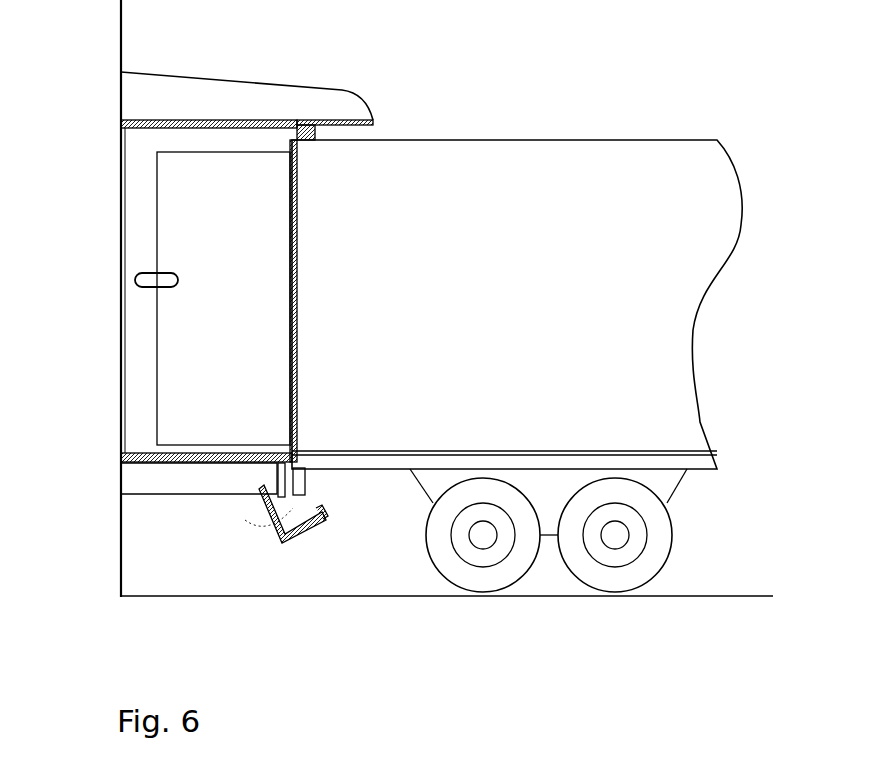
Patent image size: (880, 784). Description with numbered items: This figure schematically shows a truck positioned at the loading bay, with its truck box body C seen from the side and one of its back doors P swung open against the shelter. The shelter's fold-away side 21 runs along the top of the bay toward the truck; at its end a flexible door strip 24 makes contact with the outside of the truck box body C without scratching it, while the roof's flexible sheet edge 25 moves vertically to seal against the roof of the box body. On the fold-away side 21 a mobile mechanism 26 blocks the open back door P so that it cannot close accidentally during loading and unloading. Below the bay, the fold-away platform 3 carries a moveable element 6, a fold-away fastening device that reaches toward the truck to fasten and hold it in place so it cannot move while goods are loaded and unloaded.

The fold-away side 21 is at (138, 137).
The flexible door strip 24 is at (295, 119).
The flexible sheet edge 25 is at (320, 120).
The mobile mechanism 26 is at (158, 272).
The truck box body C is at (440, 177).
The back doors P is at (193, 373).
The fold-away platform 3 is at (227, 497).
The moveable element 6 is at (313, 530).